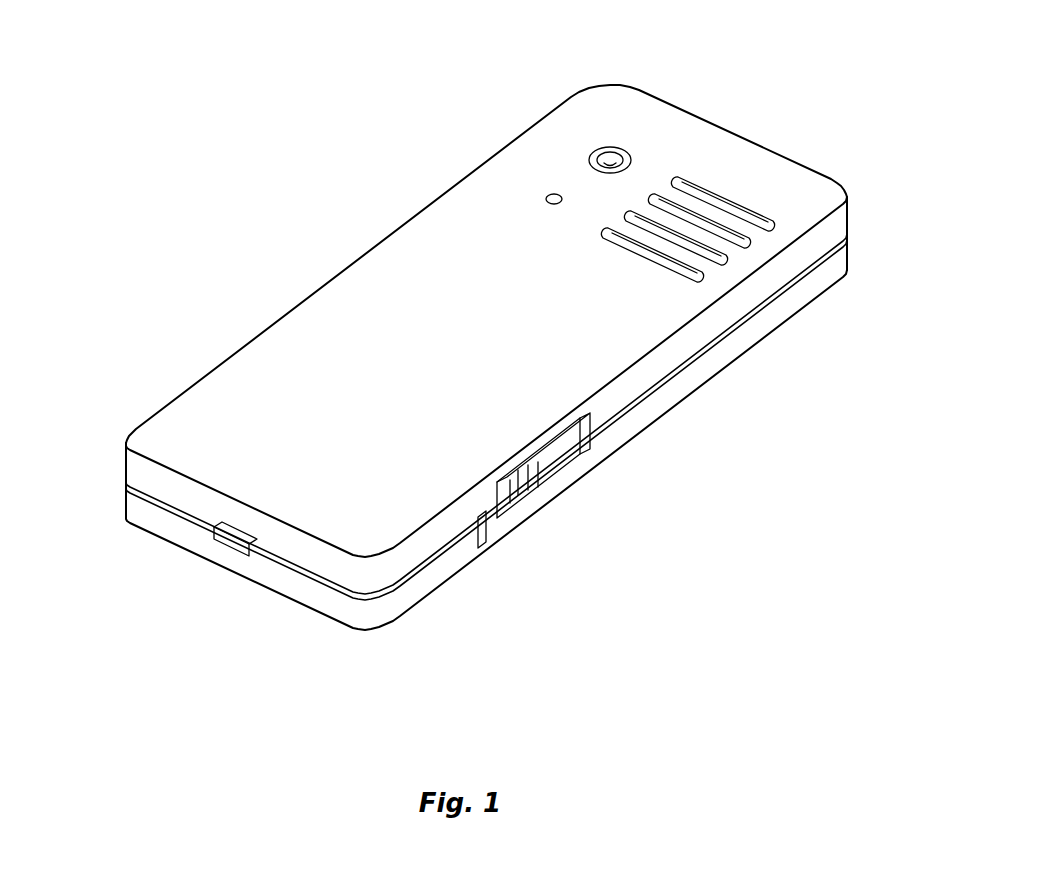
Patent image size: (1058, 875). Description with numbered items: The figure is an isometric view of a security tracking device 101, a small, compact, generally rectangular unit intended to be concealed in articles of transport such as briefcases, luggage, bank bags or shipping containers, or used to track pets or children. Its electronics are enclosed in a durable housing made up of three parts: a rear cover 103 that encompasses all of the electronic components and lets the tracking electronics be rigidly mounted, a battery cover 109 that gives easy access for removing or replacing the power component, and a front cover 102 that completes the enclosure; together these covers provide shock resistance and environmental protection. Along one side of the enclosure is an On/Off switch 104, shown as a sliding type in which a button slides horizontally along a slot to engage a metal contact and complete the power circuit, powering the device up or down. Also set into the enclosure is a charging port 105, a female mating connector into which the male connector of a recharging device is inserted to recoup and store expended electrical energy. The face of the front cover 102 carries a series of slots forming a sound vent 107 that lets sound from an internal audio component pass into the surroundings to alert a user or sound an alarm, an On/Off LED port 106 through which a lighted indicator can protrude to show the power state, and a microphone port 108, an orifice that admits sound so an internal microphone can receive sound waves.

The security tracking device 101 is at (312, 72).
The front cover 102 is at (288, 378).
The rear cover 103 is at (703, 385).
The On/Off switch 104 is at (563, 478).
The charging port 105 is at (232, 562).
The On/Off LED port 106 is at (615, 155).
The sound vent 107 is at (750, 207).
The microphone port 108 is at (554, 195).
The battery cover 109 is at (430, 573).